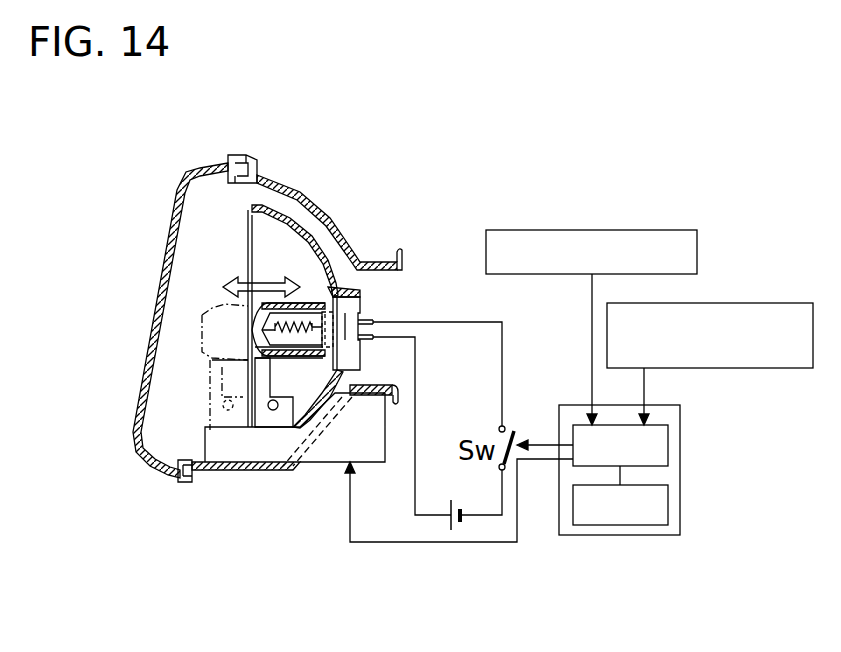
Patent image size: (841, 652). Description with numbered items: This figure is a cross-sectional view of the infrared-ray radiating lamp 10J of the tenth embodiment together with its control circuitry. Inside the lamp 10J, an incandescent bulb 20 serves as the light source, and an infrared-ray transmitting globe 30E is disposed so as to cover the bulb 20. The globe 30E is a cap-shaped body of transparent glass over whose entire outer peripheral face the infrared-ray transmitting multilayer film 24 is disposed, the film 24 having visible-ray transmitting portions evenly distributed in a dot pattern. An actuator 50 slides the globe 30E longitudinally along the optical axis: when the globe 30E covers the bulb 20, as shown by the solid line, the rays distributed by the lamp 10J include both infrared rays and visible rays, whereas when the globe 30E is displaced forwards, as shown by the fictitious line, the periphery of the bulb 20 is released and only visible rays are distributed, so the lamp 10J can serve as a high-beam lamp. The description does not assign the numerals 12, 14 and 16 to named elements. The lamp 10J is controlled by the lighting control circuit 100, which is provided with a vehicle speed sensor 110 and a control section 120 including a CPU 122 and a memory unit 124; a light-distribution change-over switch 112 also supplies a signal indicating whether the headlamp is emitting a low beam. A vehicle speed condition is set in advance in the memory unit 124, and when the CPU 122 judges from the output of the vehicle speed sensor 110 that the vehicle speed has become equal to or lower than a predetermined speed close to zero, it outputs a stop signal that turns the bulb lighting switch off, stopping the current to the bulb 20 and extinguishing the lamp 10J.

The infrared-ray radiating lamp 10J is at (160, 216).
The reflector 12 is at (352, 247).
The front lens 14 is at (150, 281).
The light source bulb 16 is at (277, 300).
The incandescent bulb 20 is at (320, 288).
The infrared-ray transmitting multilayer film 24 is at (303, 300).
The infrared-ray transmitting globe 30E is at (240, 323).
The actuator 50 is at (267, 429).
The lighting control circuit 100 is at (543, 511).
The vehicle speed sensor 110 is at (588, 230).
The light-distribution change-over switch 112 is at (733, 303).
The control section 120 is at (681, 502).
The CPU 122 is at (668, 450).
The memory unit 124 is at (668, 508).